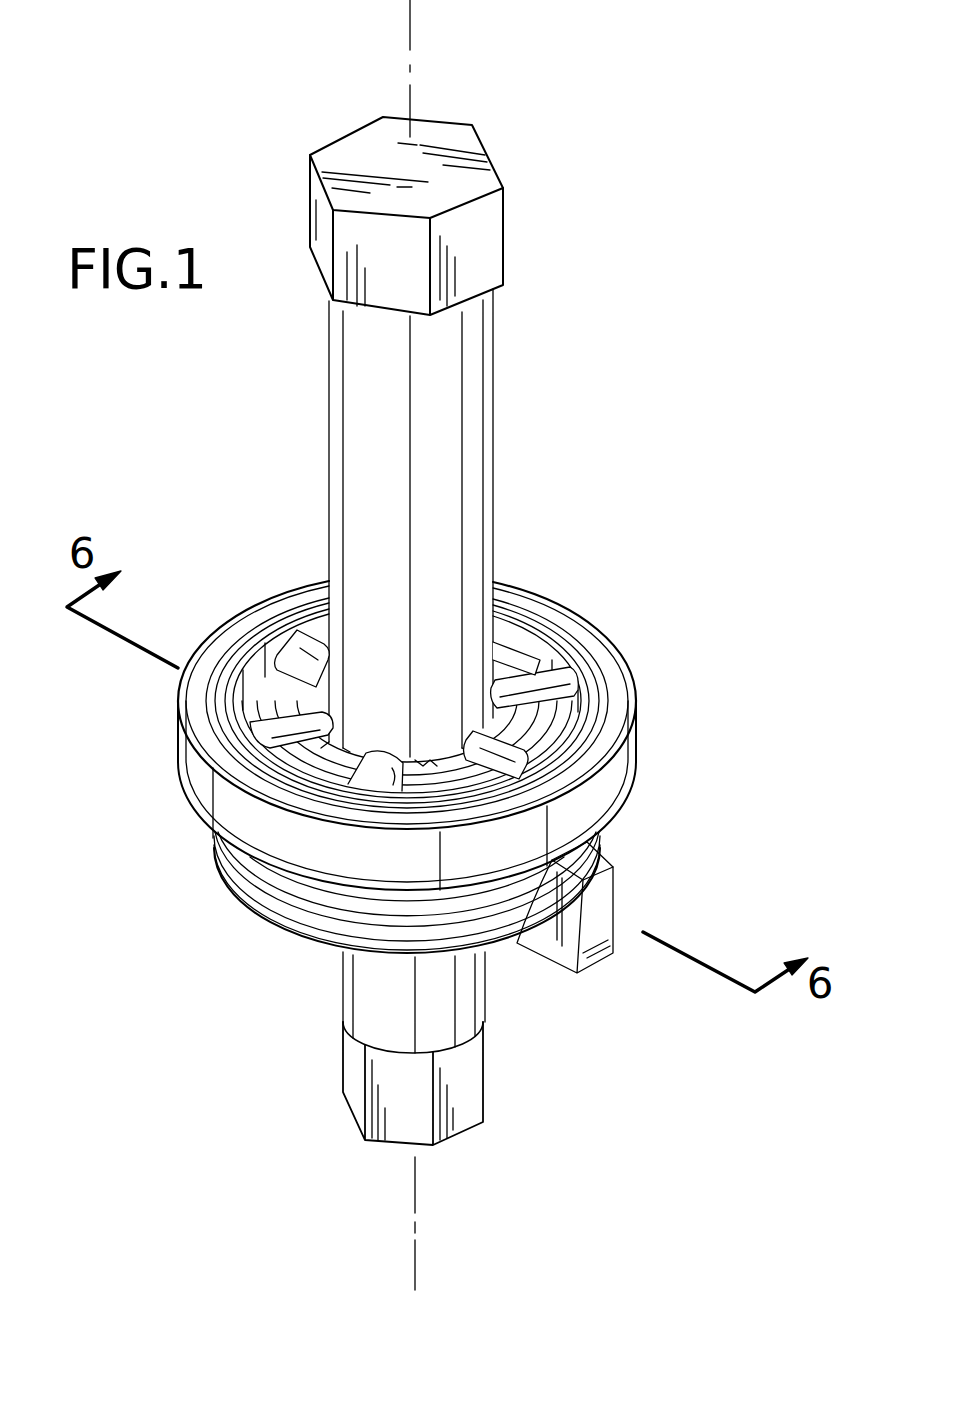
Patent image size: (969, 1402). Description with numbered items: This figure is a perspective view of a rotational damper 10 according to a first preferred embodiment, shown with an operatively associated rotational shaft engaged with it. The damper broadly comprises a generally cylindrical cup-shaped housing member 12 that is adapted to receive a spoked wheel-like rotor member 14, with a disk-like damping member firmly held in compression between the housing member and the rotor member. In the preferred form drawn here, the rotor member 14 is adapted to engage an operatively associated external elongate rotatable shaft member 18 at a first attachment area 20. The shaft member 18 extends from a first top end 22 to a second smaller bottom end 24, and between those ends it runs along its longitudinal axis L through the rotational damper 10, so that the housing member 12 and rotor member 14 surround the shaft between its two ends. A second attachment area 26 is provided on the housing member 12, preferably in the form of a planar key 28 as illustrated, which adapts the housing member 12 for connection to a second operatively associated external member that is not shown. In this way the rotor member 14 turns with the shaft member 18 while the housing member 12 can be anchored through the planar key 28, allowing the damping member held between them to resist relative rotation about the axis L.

The rotational damper 10 is at (157, 698).
The housing member 12 is at (608, 787).
The rotor member 14 is at (570, 680).
The shaft member 18 is at (487, 468).
The first attachment area 20 is at (388, 735).
The first top end 22 is at (515, 230).
The second smaller bottom end 24 is at (330, 1118).
The second attachment area 26 is at (620, 895).
The planar key 28 is at (562, 950).
The longitudinal axis L is at (410, 42).